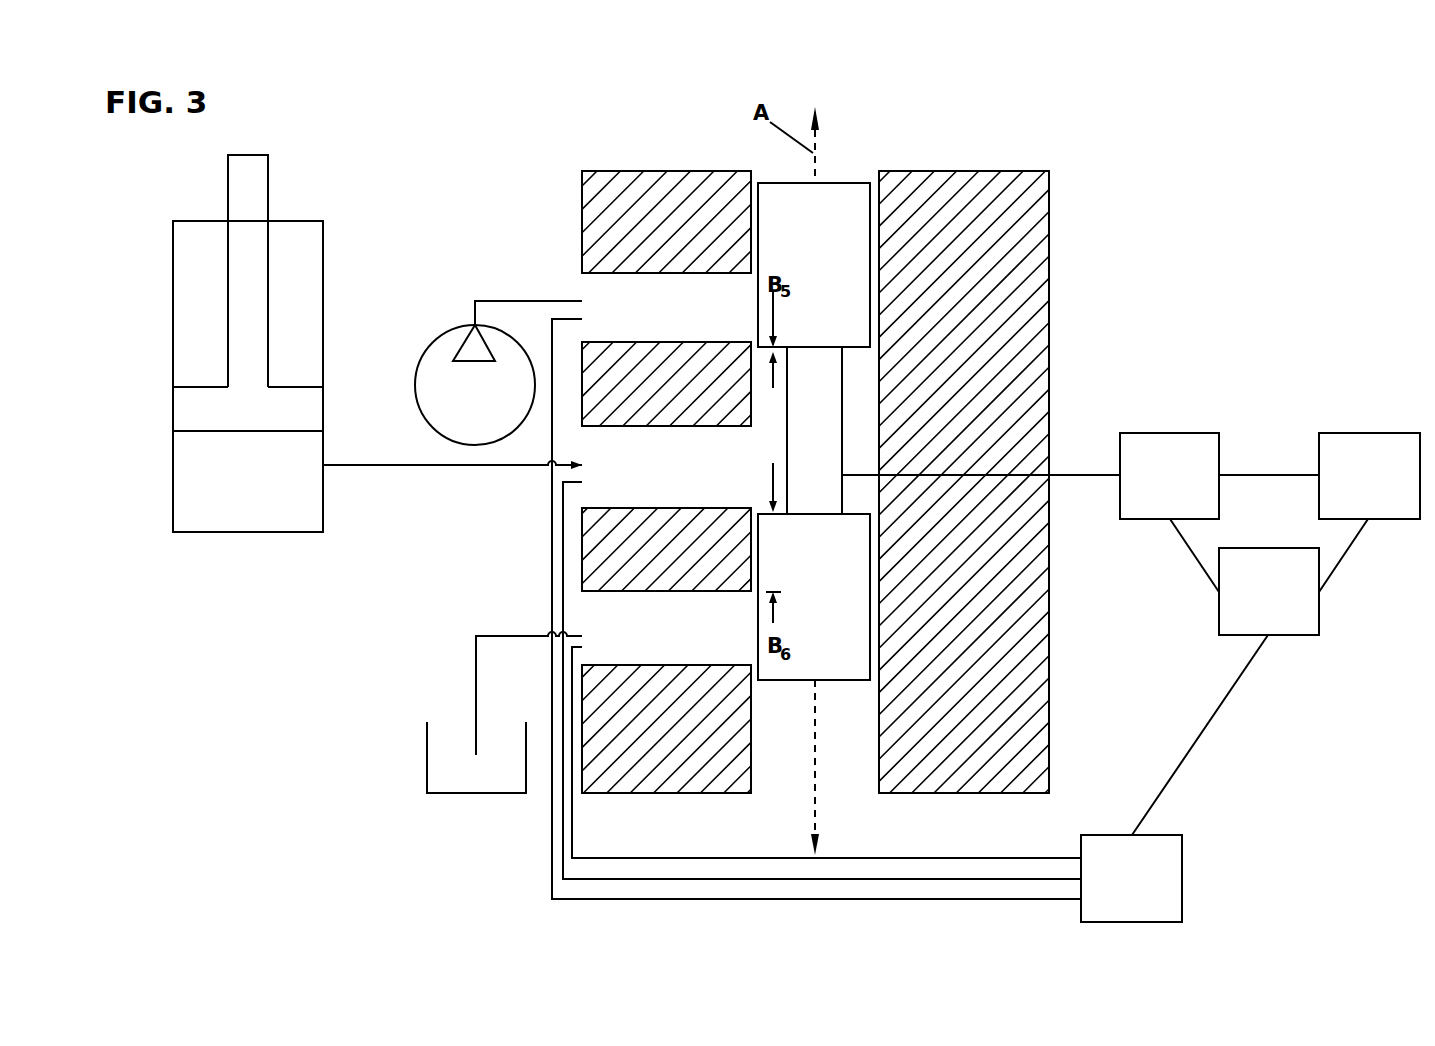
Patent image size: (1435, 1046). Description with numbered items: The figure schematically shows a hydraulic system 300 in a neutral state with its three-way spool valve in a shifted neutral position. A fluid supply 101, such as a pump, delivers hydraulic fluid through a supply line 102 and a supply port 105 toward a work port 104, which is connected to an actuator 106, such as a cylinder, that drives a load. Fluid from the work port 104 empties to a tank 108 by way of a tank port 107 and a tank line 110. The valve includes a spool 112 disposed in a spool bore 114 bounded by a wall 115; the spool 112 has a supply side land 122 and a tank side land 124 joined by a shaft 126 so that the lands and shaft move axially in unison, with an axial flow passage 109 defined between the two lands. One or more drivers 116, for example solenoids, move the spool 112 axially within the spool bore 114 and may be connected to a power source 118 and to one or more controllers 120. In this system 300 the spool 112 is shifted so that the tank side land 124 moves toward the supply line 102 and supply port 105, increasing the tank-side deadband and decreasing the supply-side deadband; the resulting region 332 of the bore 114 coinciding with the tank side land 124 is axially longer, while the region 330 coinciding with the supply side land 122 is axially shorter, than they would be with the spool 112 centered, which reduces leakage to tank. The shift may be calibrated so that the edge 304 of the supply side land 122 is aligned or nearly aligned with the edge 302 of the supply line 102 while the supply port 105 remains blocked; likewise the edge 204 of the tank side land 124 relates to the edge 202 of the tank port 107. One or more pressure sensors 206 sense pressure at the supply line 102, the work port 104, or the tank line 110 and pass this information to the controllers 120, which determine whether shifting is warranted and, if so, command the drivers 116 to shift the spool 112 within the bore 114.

The fluid supply 101 is at (455, 325).
The supply line 102 is at (647, 288).
The work port 104 is at (574, 467).
The supply port 105 is at (752, 313).
The actuator 106 is at (323, 317).
The tank port 107 is at (752, 633).
The tank 108 is at (427, 778).
The axial flow passage 109 is at (760, 465).
The tank line 110 is at (648, 657).
The spool 112 is at (838, 437).
The spool bore 114 is at (853, 787).
The wall 115 is at (880, 297).
The driver 116 is at (1202, 432).
The power source 118 is at (1385, 432).
The controller 120 is at (1305, 637).
The supply side land 122 is at (825, 252).
The tank side land 124 is at (845, 642).
The shaft 126 is at (836, 380).
The edge of the tank port 202 is at (658, 591).
The edge of the tank side land 204 is at (857, 512).
The pressure sensor 206 is at (1182, 878).
The hydraulic system 300 is at (1158, 208).
The edge of the supply line 302 is at (667, 342).
The edge of the supply side land 304 is at (880, 353).
The region of the bore 330 is at (748, 348).
The region of the bore 332 is at (750, 550).